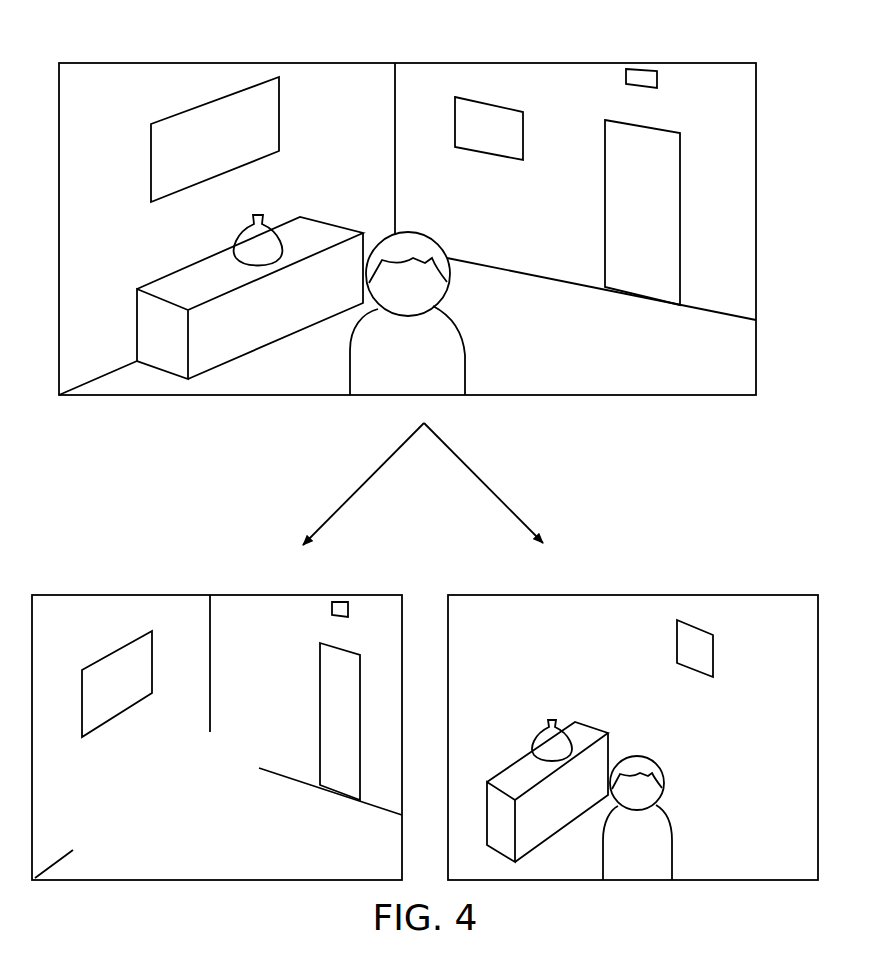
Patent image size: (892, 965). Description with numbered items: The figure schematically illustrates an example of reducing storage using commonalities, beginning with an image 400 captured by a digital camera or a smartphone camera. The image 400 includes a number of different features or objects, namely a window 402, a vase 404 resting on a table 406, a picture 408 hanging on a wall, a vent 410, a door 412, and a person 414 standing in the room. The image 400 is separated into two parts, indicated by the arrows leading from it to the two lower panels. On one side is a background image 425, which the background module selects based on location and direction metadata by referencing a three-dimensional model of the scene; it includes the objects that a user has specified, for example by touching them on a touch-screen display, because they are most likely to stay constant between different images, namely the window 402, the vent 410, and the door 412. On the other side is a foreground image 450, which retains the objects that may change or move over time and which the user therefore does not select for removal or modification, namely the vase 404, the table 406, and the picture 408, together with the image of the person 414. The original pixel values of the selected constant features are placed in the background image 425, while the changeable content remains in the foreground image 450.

The image 400 is at (100, 53).
The window 402 is at (147, 157).
The vase 404 is at (250, 227).
The table 406 is at (137, 325).
The picture 408 is at (484, 150).
The vent 410 is at (637, 89).
The door 412 is at (652, 148).
The person 414 is at (464, 350).
The background image 425 is at (85, 573).
The foreground image 450 is at (755, 577).